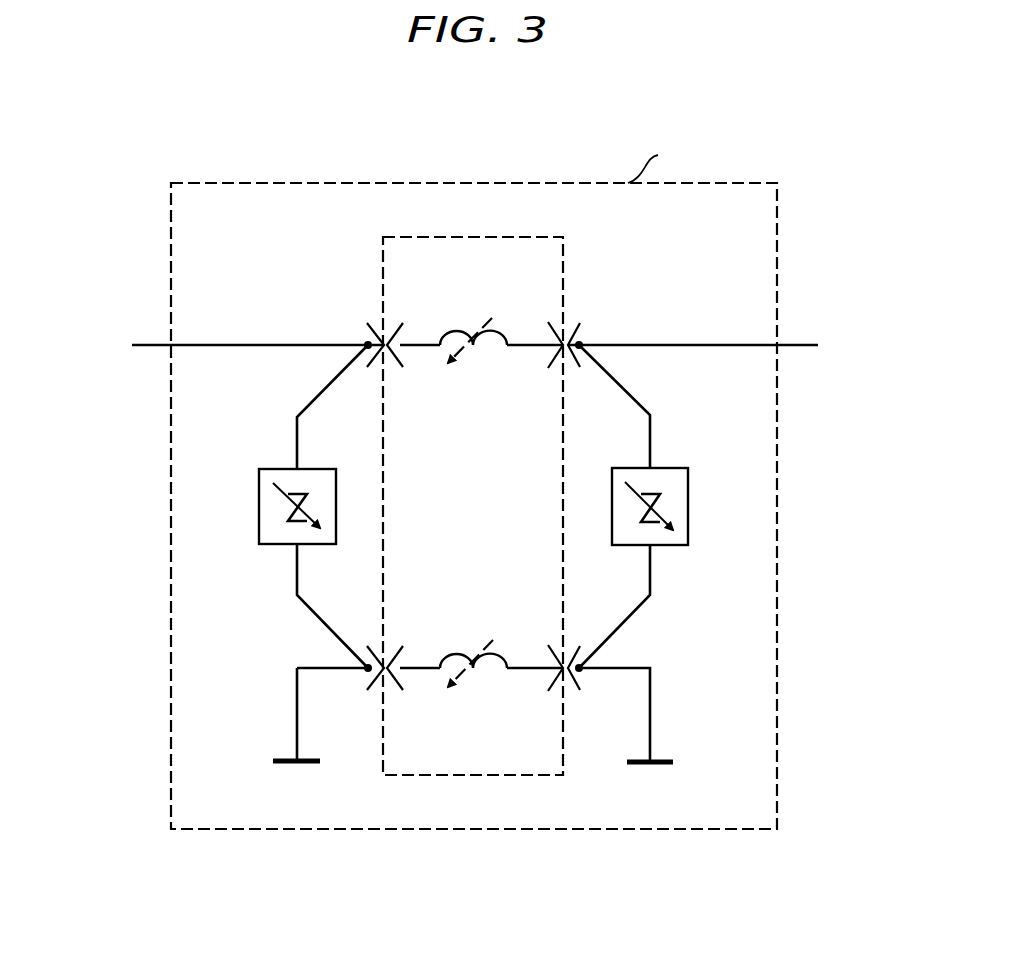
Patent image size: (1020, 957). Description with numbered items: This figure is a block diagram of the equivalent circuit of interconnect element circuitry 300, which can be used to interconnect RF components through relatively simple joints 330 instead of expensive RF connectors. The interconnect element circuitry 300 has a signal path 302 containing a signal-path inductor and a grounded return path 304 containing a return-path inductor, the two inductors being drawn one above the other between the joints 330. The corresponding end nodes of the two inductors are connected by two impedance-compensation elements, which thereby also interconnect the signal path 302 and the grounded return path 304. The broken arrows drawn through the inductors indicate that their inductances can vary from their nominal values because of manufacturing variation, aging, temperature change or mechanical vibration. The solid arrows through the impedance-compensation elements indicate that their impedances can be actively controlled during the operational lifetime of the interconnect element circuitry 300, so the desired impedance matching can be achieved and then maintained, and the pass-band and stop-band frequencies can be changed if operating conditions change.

The interconnect element circuitry 300 is at (493, 91).
The signal path 302 is at (502, 327).
The grounded return path 304 is at (502, 651).
The joint 330 is at (372, 334).